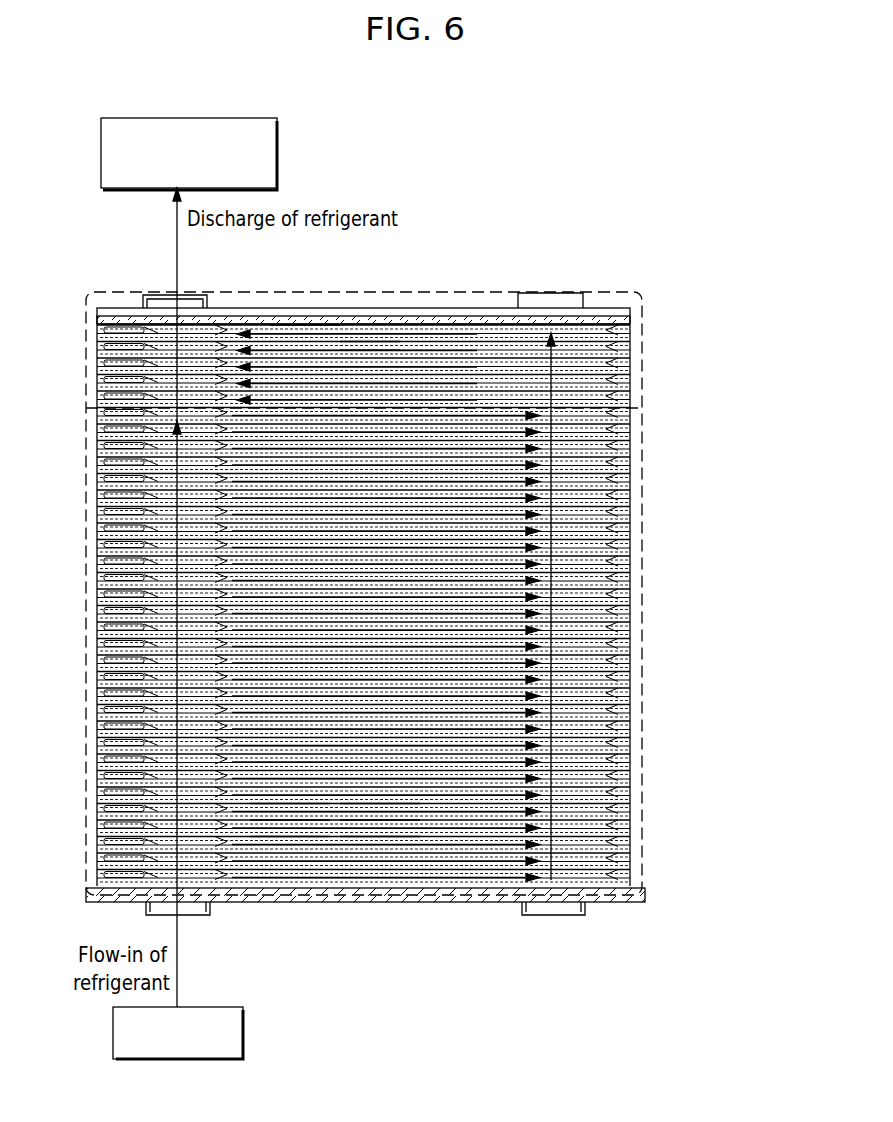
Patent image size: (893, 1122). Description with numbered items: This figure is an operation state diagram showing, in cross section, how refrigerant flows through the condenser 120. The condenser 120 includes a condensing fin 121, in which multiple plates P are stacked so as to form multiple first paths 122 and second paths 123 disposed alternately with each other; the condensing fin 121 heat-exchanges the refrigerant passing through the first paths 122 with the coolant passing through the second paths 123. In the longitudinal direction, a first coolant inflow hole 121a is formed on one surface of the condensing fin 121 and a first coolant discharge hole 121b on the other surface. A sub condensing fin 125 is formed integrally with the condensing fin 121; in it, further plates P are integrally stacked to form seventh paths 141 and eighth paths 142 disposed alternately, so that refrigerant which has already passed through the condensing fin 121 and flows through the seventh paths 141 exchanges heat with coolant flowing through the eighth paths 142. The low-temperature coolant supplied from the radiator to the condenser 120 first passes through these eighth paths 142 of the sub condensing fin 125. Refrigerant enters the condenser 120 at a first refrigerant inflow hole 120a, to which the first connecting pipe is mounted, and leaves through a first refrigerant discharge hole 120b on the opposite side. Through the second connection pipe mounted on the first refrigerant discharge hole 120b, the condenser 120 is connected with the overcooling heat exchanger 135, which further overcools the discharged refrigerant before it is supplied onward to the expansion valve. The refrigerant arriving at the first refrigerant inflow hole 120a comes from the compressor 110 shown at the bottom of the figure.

The compressor 110 is at (243, 1034).
The condenser 120 is at (700, 420).
The first refrigerant inflow hole 120a is at (187, 907).
The first refrigerant discharge hole 120b is at (160, 302).
The condensing fin 121 is at (642, 586).
The first coolant inflow hole 121a is at (552, 300).
The first coolant discharge hole 121b is at (566, 907).
The first path 122 is at (365, 809).
The second path 123 is at (278, 803).
The sub condensing fin 125 is at (642, 348).
The overcooling heat exchanger 135 is at (190, 117).
The seventh path 141 is at (377, 352).
The eighth path 142 is at (316, 340).
The plate P is at (100, 492).